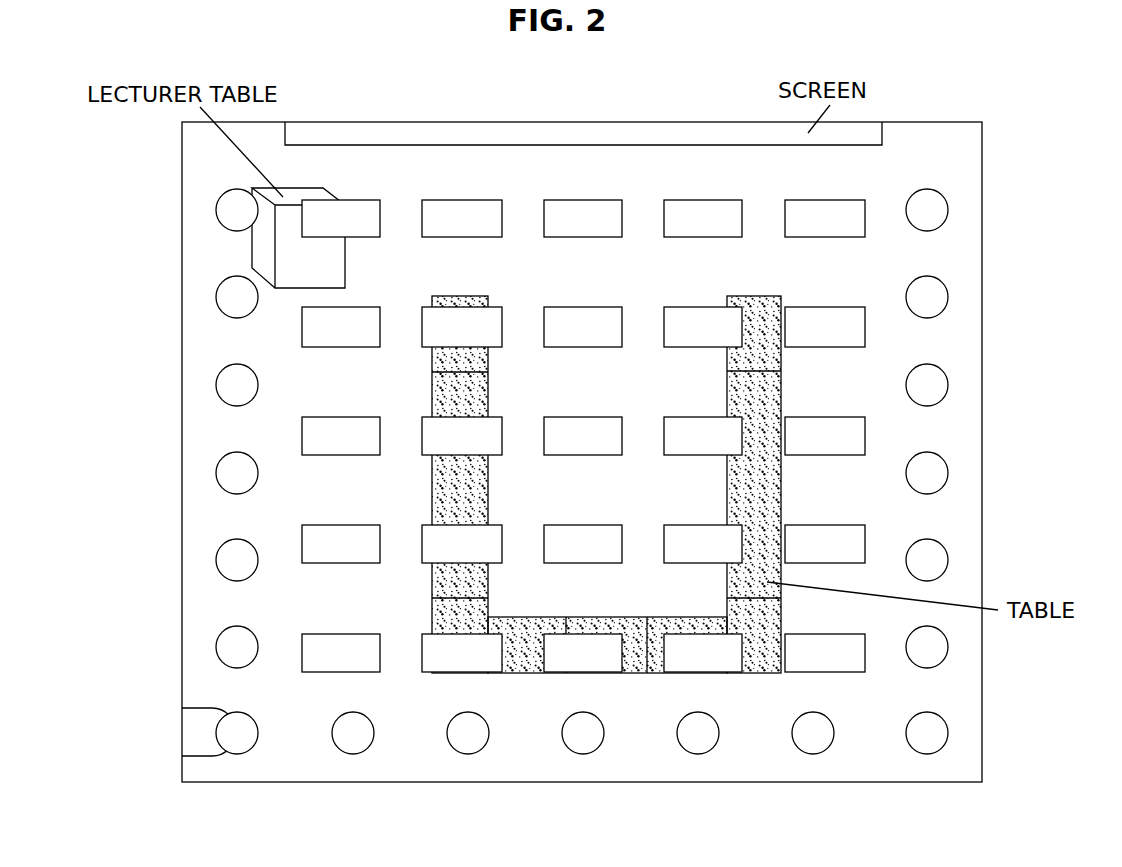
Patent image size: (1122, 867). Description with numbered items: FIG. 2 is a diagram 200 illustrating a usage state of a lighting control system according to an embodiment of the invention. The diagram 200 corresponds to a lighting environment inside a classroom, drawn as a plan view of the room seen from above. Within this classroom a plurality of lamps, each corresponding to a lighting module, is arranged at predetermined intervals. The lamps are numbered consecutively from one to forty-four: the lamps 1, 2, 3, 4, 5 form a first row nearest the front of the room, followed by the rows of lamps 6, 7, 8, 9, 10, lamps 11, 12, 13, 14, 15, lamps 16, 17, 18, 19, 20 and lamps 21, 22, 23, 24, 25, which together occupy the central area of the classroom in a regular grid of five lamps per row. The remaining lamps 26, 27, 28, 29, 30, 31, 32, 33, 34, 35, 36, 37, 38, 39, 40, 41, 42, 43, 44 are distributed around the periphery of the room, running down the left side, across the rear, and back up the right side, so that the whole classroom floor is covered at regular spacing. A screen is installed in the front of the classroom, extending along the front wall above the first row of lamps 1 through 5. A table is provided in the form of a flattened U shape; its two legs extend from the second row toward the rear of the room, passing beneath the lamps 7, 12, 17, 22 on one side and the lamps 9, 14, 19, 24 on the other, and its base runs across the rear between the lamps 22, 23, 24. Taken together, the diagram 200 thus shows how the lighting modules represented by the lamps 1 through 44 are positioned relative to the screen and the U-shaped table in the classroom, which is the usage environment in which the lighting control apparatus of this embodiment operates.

The diagram 200 is at (605, 76).
The lamp 1 is at (341, 218).
The lamp 2 is at (462, 218).
The lamp 3 is at (583, 218).
The lamp 4 is at (703, 218).
The lamp 5 is at (825, 218).
The lamp 6 is at (341, 327).
The lamp 7 is at (462, 327).
The lamp 8 is at (583, 327).
The lamp 9 is at (703, 327).
The lamp 10 is at (825, 327).
The lamp 11 is at (341, 436).
The lamp 12 is at (462, 436).
The lamp 13 is at (583, 436).
The lamp 14 is at (703, 436).
The lamp 15 is at (825, 436).
The lamp 16 is at (341, 544).
The lamp 17 is at (462, 544).
The lamp 18 is at (583, 544).
The lamp 19 is at (703, 544).
The lamp 20 is at (825, 544).
The lamp 21 is at (341, 653).
The lamp 22 is at (462, 653).
The lamp 23 is at (583, 653).
The lamp 24 is at (703, 653).
The lamp 25 is at (825, 653).
The lamp 26 is at (237, 210).
The lamp 27 is at (237, 297).
The lamp 28 is at (237, 385).
The lamp 29 is at (237, 473).
The lamp 30 is at (237, 560).
The lamp 31 is at (237, 647).
The lamp 32 is at (237, 733).
The lamp 33 is at (353, 733).
The lamp 34 is at (468, 733).
The lamp 35 is at (583, 733).
The lamp 36 is at (698, 733).
The lamp 37 is at (813, 733).
The lamp 38 is at (927, 733).
The lamp 39 is at (927, 647).
The lamp 40 is at (927, 560).
The lamp 41 is at (927, 473).
The lamp 42 is at (927, 385).
The lamp 43 is at (927, 297).
The lamp 44 is at (927, 210).